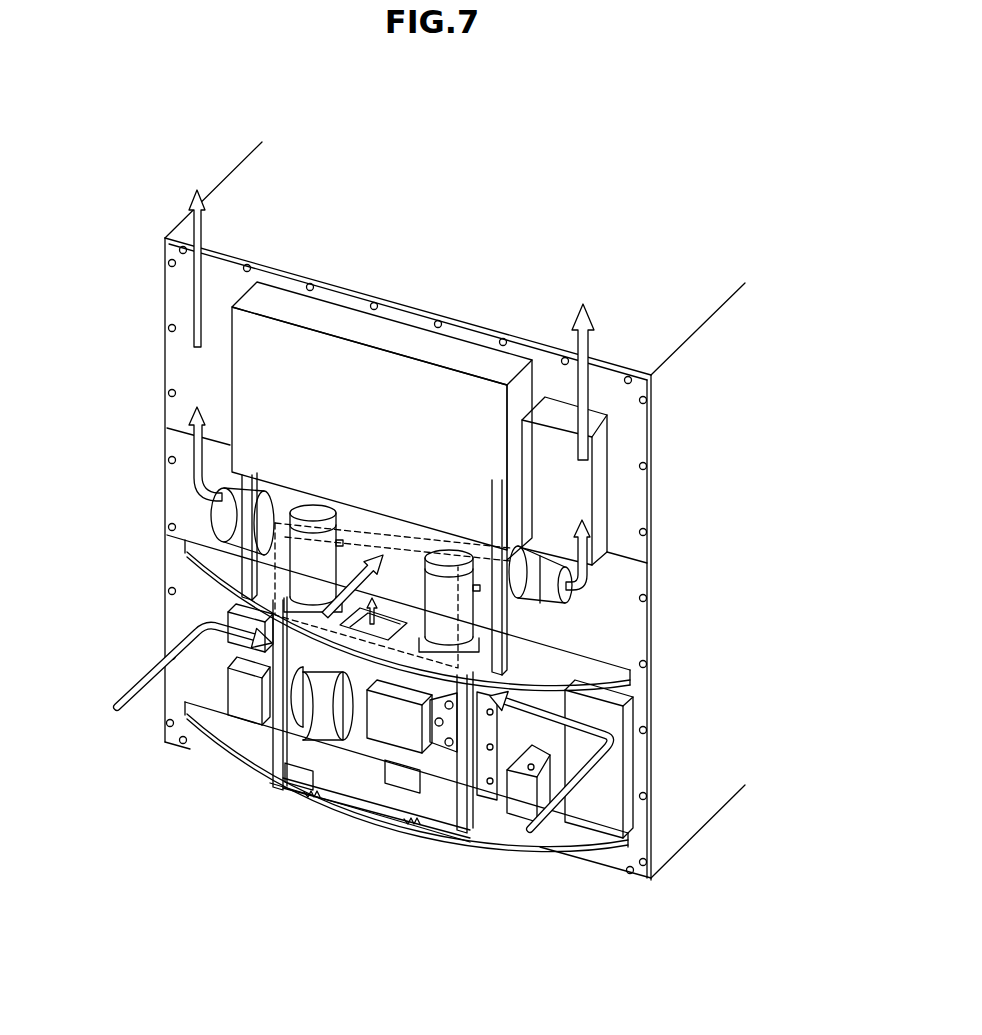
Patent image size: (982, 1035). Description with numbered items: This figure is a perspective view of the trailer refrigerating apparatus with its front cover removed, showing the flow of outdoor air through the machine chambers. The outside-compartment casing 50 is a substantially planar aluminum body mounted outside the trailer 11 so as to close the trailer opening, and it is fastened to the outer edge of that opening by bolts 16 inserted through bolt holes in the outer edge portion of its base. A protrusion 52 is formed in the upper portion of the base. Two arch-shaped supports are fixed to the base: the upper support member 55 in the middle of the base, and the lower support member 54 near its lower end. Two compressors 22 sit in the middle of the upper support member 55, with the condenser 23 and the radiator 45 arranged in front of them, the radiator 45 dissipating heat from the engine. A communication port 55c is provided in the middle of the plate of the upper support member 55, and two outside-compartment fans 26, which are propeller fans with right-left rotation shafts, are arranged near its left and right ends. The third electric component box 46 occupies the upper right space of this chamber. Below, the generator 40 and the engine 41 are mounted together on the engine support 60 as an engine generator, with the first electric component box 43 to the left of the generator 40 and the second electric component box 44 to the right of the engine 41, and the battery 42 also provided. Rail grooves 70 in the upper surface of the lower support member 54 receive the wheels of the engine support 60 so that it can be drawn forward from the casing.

The trailer 11 is at (237, 168).
The outside-compartment casing 50 is at (165, 308).
The bolt 16 is at (382, 381).
The protrusion 52 is at (413, 390).
The compressor 22 is at (317, 508).
The condenser 23 is at (350, 535).
The radiator 45 is at (393, 535).
The third electric component box 46 is at (580, 496).
The upper support member 55 is at (188, 557).
The communication port 55c is at (391, 630).
The outside-compartment fan 26 is at (223, 510).
The lower support member 54 is at (225, 735).
The first electric component box 43 is at (247, 707).
The generator 40 is at (317, 715).
The engine 41 is at (402, 733).
The engine support 60 is at (367, 804).
The rail groove 70 is at (307, 802).
The battery 42 is at (517, 797).
The second electric component box 44 is at (608, 803).